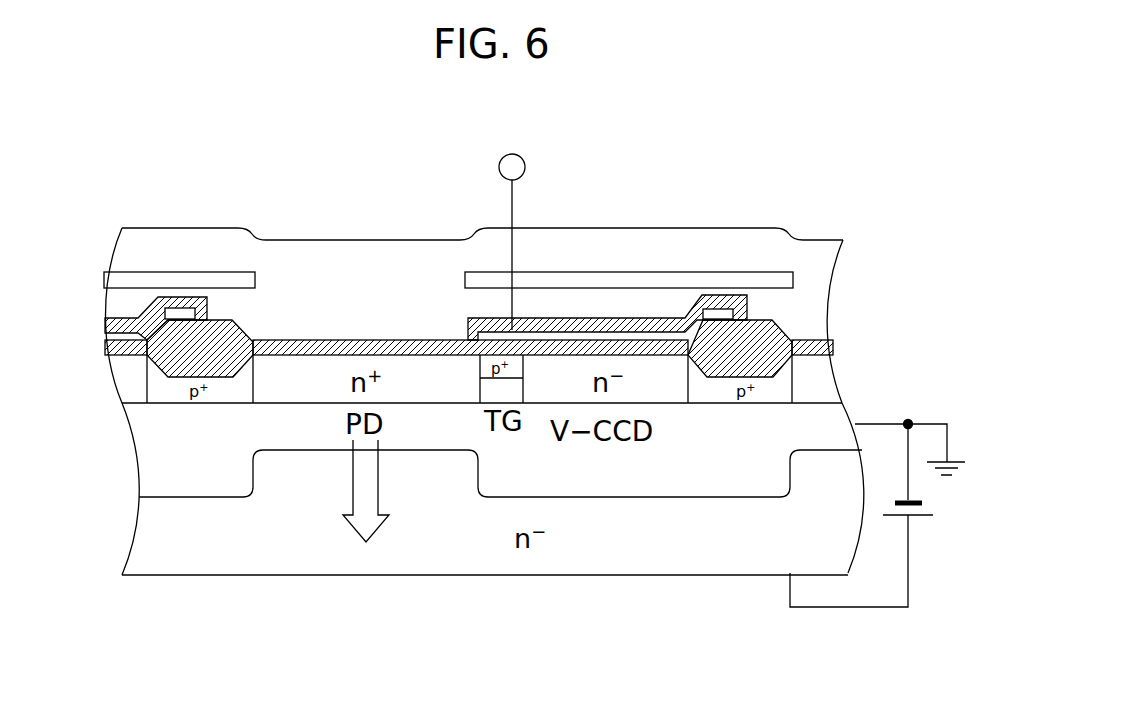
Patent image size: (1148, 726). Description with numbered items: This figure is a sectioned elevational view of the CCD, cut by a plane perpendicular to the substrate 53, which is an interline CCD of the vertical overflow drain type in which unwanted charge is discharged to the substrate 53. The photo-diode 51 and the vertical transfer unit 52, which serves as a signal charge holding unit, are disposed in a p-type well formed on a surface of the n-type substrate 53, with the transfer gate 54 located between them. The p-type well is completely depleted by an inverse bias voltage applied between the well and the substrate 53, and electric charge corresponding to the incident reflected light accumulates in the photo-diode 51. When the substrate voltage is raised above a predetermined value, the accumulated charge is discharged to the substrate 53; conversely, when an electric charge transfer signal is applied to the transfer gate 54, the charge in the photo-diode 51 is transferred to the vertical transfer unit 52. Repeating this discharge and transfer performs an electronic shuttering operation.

The photo-diode 51 is at (295, 428).
The vertical transfer unit 52 is at (658, 468).
The substrate 53 is at (482, 547).
The transfer gate 54 is at (490, 387).